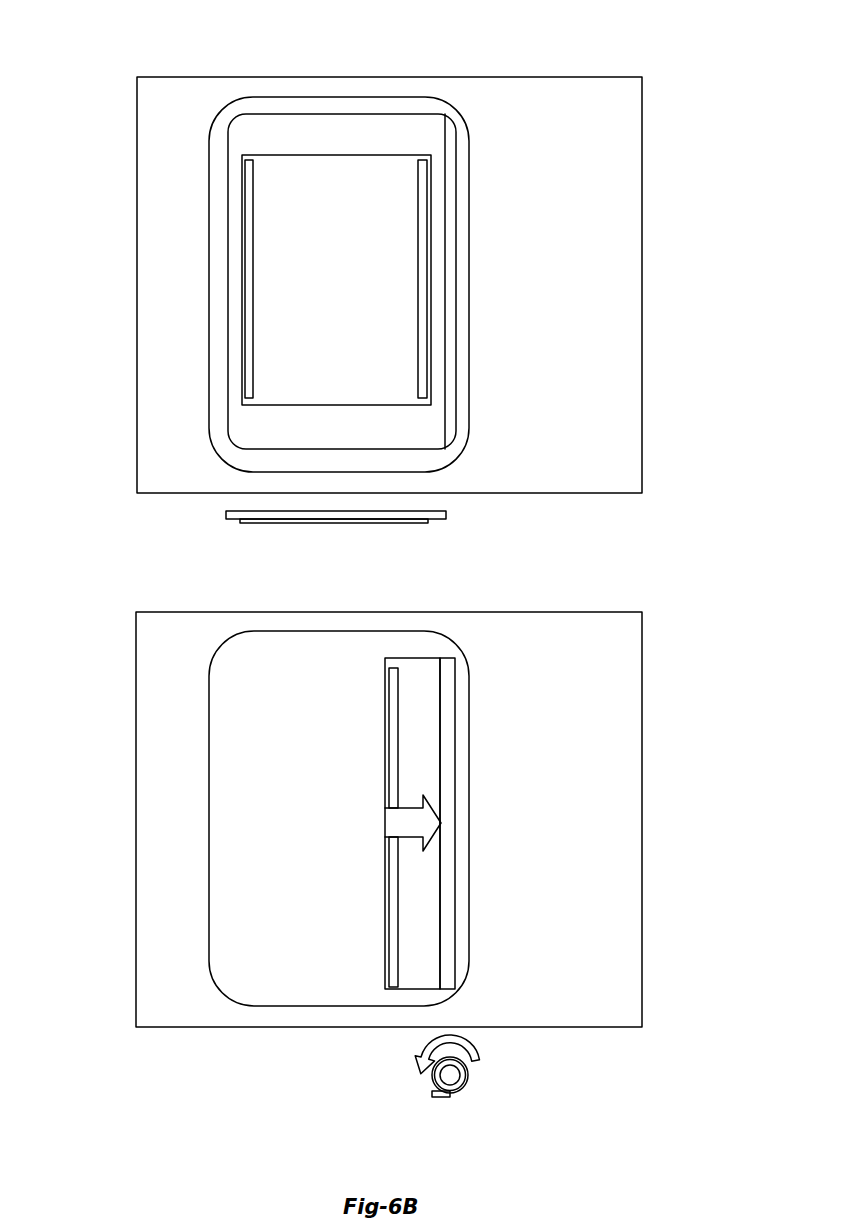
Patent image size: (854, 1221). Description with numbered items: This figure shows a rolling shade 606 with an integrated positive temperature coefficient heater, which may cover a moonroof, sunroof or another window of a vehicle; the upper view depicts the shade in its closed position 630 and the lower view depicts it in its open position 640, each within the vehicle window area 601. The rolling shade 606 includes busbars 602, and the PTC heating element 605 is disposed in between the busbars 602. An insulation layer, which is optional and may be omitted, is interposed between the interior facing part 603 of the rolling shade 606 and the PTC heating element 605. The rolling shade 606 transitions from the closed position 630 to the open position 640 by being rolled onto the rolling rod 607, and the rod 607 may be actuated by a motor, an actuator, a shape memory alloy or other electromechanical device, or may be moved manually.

The electronic device 601 is at (568, 167).
The busbars 602 is at (250, 223).
The interior facing part 603 is at (397, 407).
The PTC heating element 605 is at (253, 523).
The rolling shade 606 is at (222, 382).
The rolling rod 607 is at (448, 240).
The closed position 630 is at (711, 113).
The open position 640 is at (711, 648).